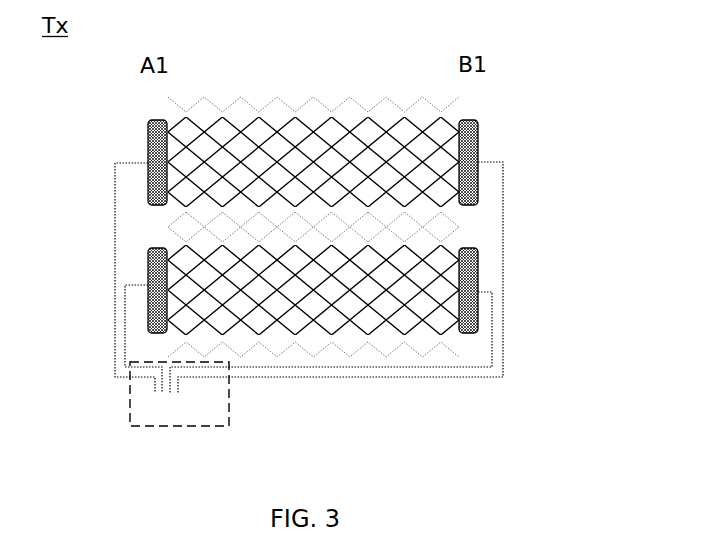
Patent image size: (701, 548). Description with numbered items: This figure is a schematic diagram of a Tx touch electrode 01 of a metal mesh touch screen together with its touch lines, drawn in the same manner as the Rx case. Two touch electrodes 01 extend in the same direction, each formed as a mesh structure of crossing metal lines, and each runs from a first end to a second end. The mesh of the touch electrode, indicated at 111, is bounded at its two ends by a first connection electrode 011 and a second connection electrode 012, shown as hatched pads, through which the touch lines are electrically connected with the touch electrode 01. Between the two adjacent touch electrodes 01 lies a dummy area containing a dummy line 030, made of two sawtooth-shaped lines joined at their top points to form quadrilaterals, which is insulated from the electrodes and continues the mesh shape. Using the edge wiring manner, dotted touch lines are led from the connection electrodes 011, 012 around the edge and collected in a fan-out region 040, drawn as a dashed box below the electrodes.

The touch electrode 01 is at (265, 273).
The first connection electrode 011 is at (111, 224).
The second connection electrode 012 is at (515, 215).
The metal mesh touch electrode 111 is at (307, 209).
The dummy line 030 is at (470, 227).
The fan-out region 040 is at (222, 424).